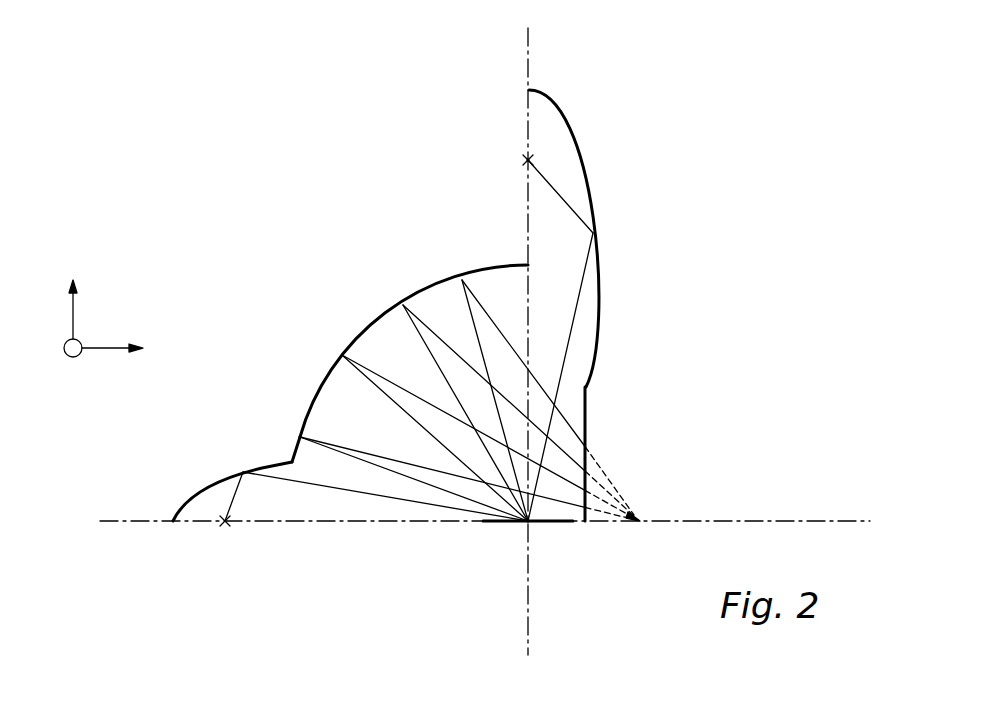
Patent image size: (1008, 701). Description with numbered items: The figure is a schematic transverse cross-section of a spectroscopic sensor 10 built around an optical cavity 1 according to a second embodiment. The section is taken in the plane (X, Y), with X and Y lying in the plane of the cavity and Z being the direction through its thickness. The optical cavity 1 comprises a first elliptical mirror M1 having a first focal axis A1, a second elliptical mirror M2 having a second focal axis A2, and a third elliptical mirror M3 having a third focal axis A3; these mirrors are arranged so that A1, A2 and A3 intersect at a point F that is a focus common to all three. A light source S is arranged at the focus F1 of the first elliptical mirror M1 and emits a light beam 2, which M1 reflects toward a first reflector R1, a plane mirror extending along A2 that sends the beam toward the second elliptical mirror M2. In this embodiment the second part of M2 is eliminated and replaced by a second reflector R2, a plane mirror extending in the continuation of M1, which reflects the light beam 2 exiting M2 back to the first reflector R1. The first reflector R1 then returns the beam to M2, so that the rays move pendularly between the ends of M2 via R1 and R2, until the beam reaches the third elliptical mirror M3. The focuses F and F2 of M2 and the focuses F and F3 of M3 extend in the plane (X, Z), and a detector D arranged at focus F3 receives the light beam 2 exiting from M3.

The spectroscopic sensor 10 is at (413, 342).
The optical cavity 1 is at (338, 404).
The light beam 2 is at (437, 325).
The first elliptical mirror M1 is at (590, 142).
The second elliptical mirror M2 is at (366, 310).
The third elliptical mirror M3 is at (203, 472).
The first reflector R1 is at (510, 563).
The second reflector R2 is at (602, 398).
The common focus F is at (539, 537).
The focus of first elliptical mirror F1 is at (545, 152).
The focus of second elliptical mirror F2 is at (642, 537).
The focus of third elliptical mirror F3 is at (214, 539).
The light source S is at (518, 164).
The detector D is at (243, 513).
The first focal axis A1 is at (512, 330).
The second focal axis A2 is at (703, 505).
The third focal axis A3 is at (294, 505).
The X direction X is at (122, 350).
The Y direction Y is at (73, 295).
The Z direction Z is at (60, 350).